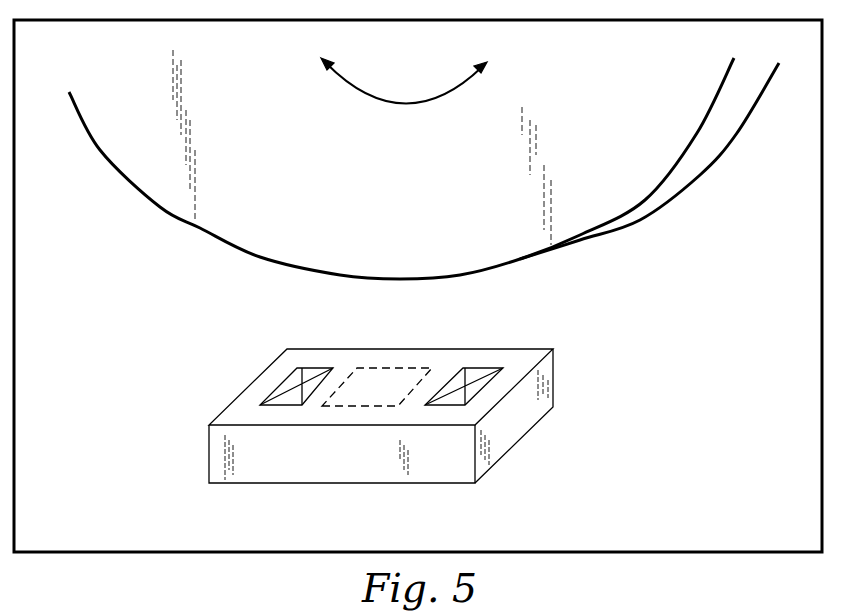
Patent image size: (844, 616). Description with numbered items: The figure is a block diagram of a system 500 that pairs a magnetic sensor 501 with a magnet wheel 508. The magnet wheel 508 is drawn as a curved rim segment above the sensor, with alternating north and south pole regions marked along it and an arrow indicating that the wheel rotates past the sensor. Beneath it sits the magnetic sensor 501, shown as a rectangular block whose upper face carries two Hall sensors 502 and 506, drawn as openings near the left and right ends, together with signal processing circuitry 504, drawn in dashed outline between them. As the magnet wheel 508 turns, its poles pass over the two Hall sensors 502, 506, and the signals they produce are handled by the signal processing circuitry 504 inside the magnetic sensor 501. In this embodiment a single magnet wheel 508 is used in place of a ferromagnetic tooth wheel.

The system 500 is at (444, 398).
The magnetic sensor 501 is at (218, 416).
The Hall sensor 502 is at (272, 388).
The signal processing circuitry 504 is at (402, 365).
The Hall sensor 506 is at (482, 368).
The magnet wheel 508 is at (425, 143).